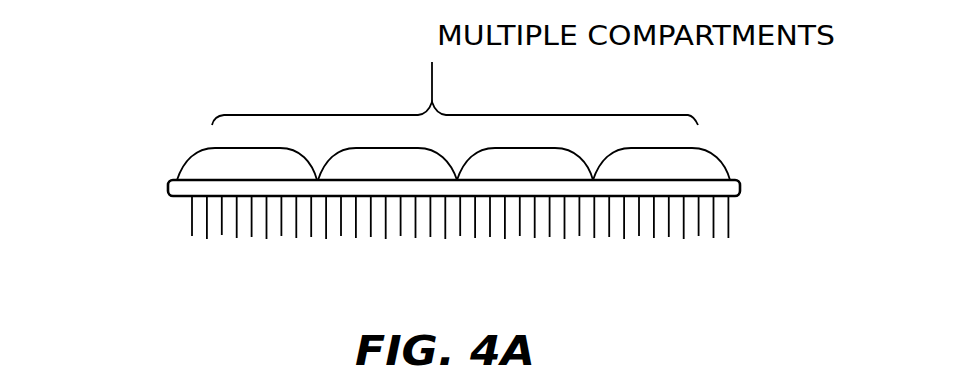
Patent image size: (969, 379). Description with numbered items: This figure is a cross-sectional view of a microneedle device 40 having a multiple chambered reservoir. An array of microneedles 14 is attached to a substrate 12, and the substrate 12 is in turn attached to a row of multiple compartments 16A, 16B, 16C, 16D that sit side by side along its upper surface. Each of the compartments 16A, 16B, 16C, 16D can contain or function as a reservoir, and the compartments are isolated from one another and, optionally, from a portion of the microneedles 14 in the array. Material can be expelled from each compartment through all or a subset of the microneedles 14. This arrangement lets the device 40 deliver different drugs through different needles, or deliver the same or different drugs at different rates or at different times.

The microneedle device 40 is at (120, 154).
The substrate 12 is at (740, 188).
The microneedles 14 is at (733, 217).
The compartment 16A is at (247, 164).
The compartment 16B is at (387, 164).
The compartment 16C is at (525, 164).
The compartment 16D is at (661, 164).